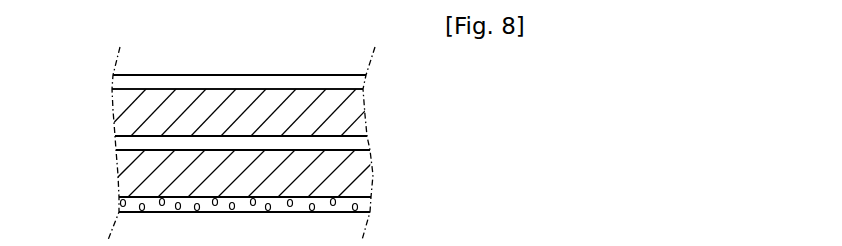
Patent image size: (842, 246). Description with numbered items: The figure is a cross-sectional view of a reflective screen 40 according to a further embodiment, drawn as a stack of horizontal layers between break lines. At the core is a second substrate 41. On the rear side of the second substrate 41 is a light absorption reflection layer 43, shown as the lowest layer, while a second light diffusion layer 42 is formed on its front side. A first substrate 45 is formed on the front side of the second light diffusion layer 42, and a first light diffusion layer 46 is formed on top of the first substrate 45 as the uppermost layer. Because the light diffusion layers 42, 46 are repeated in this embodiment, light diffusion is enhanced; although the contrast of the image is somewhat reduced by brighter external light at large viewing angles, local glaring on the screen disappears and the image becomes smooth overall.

The reflective screen 40 is at (88, 166).
The second substrate 41 is at (365, 177).
The second light diffusion layer 42 is at (368, 143).
The light absorption reflection layer 43 is at (368, 206).
The first substrate 45 is at (357, 114).
The first light diffusion layer 46 is at (363, 83).